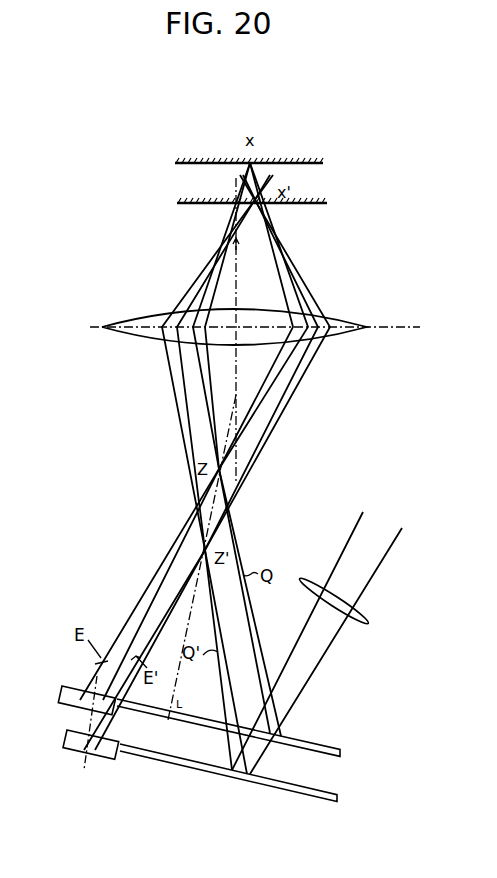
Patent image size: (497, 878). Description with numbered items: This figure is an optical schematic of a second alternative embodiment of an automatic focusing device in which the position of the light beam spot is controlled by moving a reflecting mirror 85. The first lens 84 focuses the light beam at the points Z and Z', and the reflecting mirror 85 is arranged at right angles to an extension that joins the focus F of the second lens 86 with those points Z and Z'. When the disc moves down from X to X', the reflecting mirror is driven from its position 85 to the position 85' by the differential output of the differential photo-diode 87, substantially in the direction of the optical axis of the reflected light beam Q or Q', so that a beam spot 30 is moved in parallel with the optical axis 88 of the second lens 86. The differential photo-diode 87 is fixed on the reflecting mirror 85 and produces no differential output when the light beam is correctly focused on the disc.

The beam spot 30 is at (262, 196).
The optical axis 88 is at (237, 282).
The second lens 86 is at (344, 314).
The first lens 84 is at (362, 610).
The reflecting mirror 85 is at (237, 744).
The reflecting mirror (displaced position) 85' is at (228, 793).
The differential photo-diode 87 is at (66, 742).